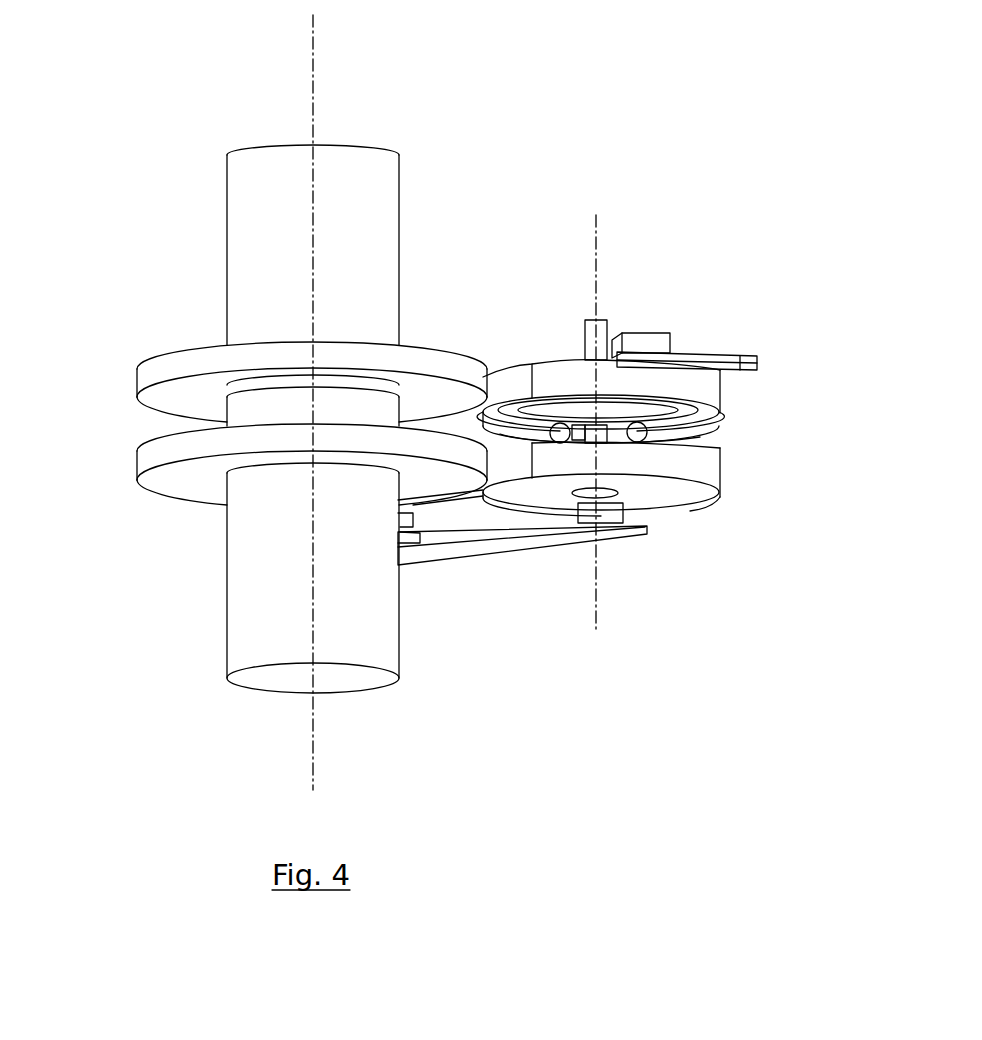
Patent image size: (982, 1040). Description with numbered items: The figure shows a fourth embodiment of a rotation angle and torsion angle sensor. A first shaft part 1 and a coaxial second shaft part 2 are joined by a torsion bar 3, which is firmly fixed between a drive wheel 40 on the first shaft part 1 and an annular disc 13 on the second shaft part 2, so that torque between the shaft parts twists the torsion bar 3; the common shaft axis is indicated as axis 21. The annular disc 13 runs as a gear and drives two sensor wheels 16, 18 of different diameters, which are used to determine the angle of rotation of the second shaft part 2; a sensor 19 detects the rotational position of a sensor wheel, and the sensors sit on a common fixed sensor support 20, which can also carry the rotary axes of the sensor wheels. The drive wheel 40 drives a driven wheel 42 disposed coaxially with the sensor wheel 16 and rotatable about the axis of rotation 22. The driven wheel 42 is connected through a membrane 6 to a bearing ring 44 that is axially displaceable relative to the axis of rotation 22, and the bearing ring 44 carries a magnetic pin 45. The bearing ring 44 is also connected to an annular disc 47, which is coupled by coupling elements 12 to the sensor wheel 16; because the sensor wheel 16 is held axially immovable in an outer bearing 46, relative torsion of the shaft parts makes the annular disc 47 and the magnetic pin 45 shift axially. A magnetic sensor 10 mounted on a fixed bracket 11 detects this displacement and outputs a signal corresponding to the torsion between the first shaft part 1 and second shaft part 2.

The first shaft part 1 is at (251, 197).
The second shaft part 2 is at (270, 678).
The torsion bar 3 is at (277, 410).
The membrane 6 is at (712, 413).
The magnetic sensor 10 is at (655, 345).
The fixed bracket 11 is at (733, 357).
The coupling elements 12 is at (580, 437).
The annular disc 13 is at (172, 483).
The sensor wheel 16 is at (677, 496).
The sensor wheel 18 is at (452, 515).
The sensor 19 is at (623, 523).
The common fixed sensor support 20 is at (553, 544).
The first axis 21 is at (311, 34).
The axis of rotation 22 is at (597, 218).
The drive wheel 40 is at (150, 373).
The driven wheel 42 is at (506, 384).
The bearing ring 44 is at (733, 361).
The magnetic pin 45 is at (583, 344).
The outer bearing 46 is at (714, 478).
The annular disc 47 is at (695, 436).